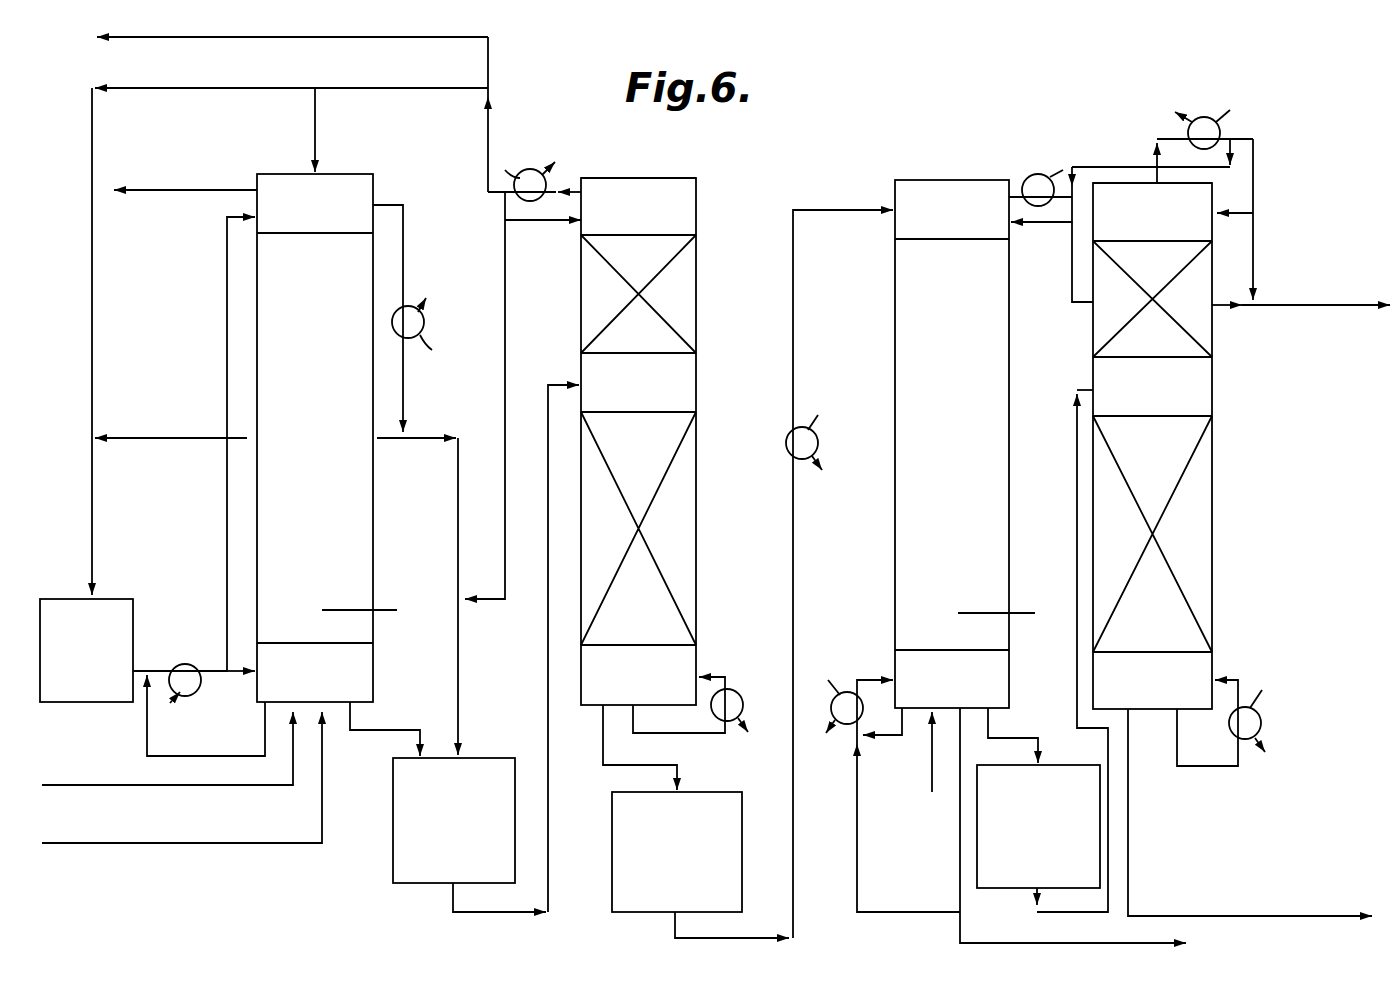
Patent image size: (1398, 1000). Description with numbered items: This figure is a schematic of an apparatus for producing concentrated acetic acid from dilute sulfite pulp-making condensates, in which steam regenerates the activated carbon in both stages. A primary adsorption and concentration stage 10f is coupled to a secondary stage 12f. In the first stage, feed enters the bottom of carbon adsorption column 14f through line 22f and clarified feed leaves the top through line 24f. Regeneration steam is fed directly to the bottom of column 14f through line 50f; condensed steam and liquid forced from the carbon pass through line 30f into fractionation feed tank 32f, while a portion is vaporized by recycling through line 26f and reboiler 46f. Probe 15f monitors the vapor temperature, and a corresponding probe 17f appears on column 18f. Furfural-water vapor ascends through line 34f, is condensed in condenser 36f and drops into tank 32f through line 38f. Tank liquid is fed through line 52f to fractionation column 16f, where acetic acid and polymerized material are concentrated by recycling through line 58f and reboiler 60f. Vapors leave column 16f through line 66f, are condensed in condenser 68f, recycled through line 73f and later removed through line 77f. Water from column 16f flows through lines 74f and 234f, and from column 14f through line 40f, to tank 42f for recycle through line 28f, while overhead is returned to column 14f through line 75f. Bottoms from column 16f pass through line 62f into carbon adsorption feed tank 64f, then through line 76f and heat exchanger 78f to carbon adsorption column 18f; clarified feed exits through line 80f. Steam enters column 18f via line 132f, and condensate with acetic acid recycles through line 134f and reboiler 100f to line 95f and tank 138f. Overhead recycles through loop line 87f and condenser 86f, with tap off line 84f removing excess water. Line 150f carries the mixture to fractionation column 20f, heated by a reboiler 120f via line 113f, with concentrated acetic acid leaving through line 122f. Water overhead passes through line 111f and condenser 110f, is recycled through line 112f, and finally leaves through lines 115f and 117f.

The primary adsorption and concentration stage 10f is at (702, 160).
The secondary stage 12f is at (1290, 163).
The carbon adsorption column 14f is at (352, 165).
The probe 15f is at (380, 612).
The fractionation column 16f is at (688, 202).
The interface level line 17f is at (1020, 613).
The carbon adsorption column 18f is at (910, 190).
The fractionation column 20f is at (1205, 198).
The line 22f is at (185, 843).
The line 24f is at (168, 195).
The line 26f is at (180, 756).
The line 28f is at (157, 668).
The line 30f is at (362, 730).
The fractionation feed tank 32f is at (475, 757).
The line 34f is at (404, 240).
The condenser 36f is at (425, 320).
The line 38f is at (456, 515).
The line 40f is at (150, 435).
The tank 42f is at (105, 598).
The reboiler 46f is at (190, 645).
The line 50f is at (205, 785).
The line 52f is at (548, 637).
The line 58f is at (662, 733).
The reboiler 60f is at (743, 702).
The line 62f is at (603, 730).
The carbon adsorption feed tank 64f is at (700, 792).
The line 66f is at (578, 190).
The condenser 68f is at (495, 182).
The line 73f is at (545, 222).
The line 74f is at (487, 128).
The line 75f is at (314, 115).
The line 76f is at (793, 570).
The line 77f is at (500, 60).
The heat exchanger 78f is at (818, 443).
The line 80f is at (958, 866).
The tap off line 84f is at (1072, 302).
The condenser 86f is at (1018, 174).
The loop line 87f is at (1075, 165).
The line 95f is at (995, 735).
The reboiler 100f is at (845, 722).
The condenser 110f is at (1200, 118).
The line 111f is at (1152, 158).
The line 112f is at (1240, 213).
The reboiler line 113f is at (1212, 766).
The line 115f is at (1255, 270).
The line 117f is at (1318, 305).
The reboiler heater 120f is at (1262, 722).
The line 122f is at (1128, 840).
The line 132f is at (932, 780).
The line 134f is at (902, 725).
The tank 138f is at (1068, 752).
The line 150f is at (1075, 497).
The line 234f is at (362, 88).